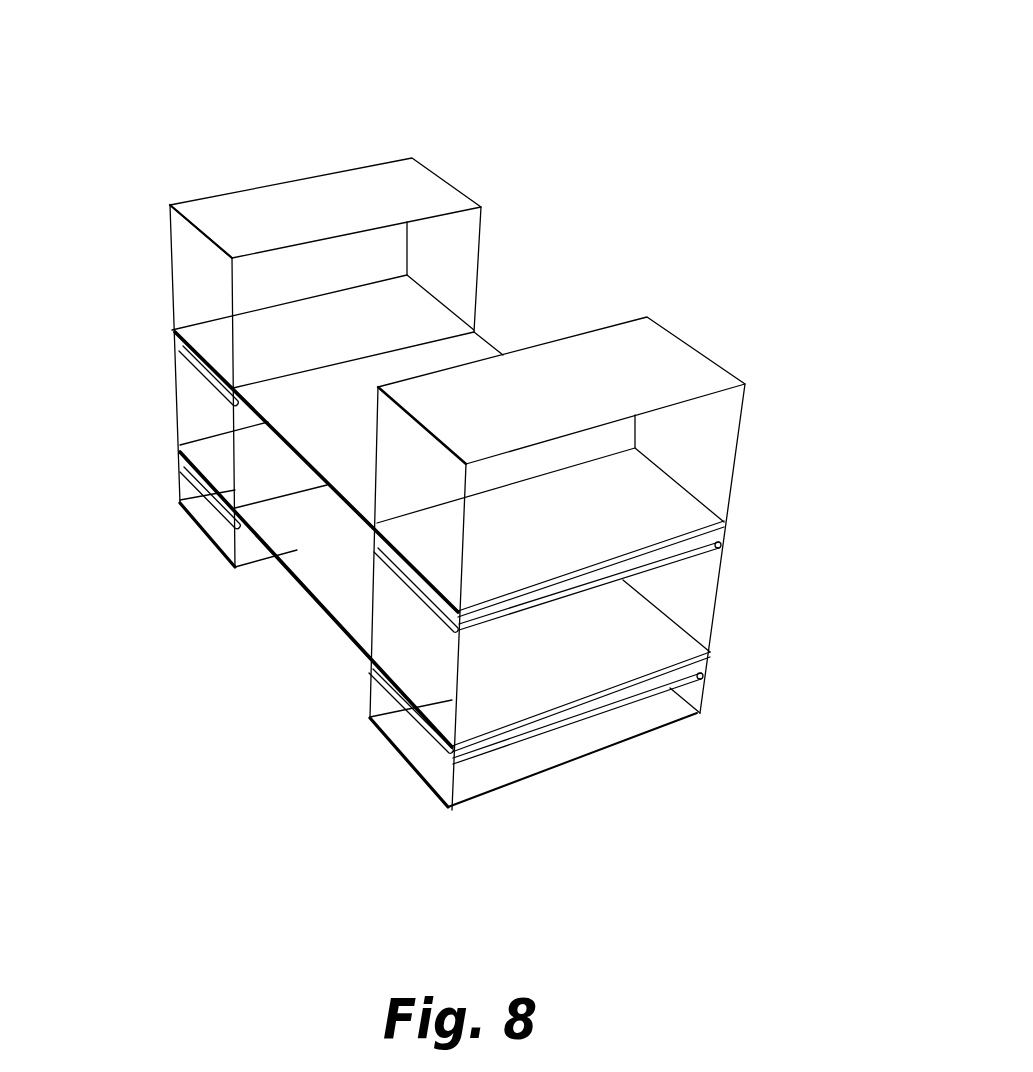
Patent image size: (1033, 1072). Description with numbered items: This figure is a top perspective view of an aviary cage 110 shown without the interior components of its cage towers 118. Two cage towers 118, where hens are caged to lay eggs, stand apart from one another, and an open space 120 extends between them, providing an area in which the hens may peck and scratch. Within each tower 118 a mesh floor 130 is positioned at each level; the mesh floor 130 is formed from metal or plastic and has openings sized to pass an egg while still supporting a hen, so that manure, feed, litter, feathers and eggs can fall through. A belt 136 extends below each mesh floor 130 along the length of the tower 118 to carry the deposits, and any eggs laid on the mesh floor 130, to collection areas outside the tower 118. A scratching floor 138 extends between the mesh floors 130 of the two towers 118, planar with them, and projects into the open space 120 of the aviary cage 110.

The aviary cage 110 is at (690, 73).
The cage tower 118 is at (477, 161).
The open space 120 is at (538, 298).
The mesh floor 130 is at (199, 356).
The belt 136 is at (179, 346).
The scratching floor 138 is at (358, 421).